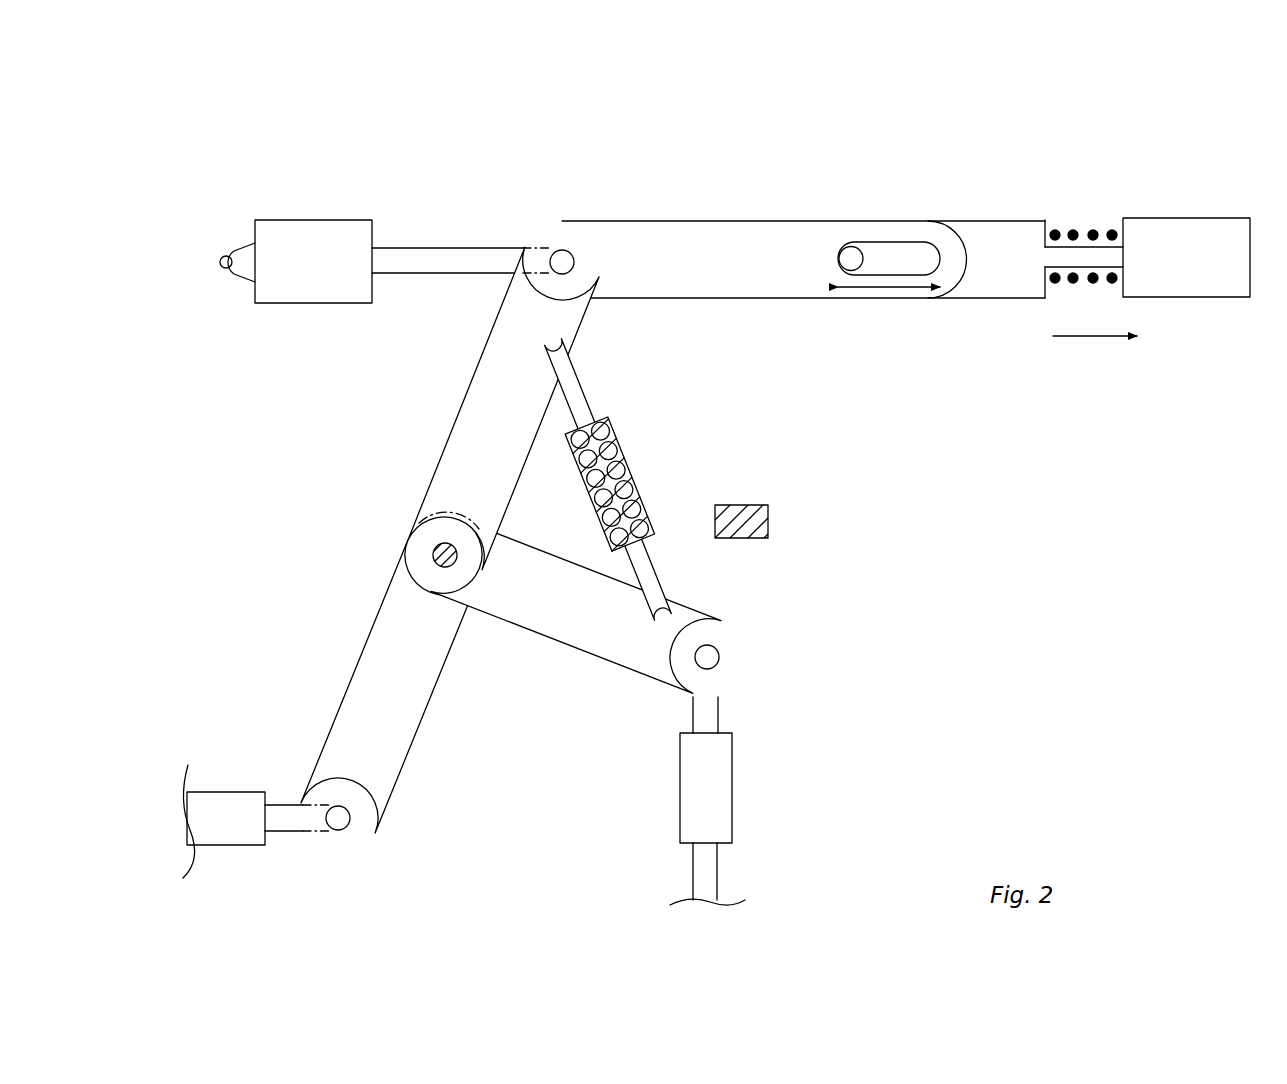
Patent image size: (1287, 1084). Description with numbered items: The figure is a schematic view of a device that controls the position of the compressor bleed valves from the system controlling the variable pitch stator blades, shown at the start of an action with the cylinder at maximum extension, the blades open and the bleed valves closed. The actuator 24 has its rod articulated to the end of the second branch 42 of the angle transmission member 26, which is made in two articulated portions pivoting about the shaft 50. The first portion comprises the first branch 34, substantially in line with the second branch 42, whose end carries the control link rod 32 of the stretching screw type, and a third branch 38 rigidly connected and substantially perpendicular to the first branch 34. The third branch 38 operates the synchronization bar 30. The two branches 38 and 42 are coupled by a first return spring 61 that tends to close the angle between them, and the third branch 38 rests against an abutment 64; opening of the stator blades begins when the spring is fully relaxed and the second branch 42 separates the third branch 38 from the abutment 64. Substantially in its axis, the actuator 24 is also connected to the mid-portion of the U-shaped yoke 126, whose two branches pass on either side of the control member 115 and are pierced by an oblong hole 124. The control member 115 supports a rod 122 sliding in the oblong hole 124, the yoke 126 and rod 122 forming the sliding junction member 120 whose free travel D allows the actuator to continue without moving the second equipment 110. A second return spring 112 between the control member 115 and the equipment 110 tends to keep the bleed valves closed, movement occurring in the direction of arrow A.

The sliding junction member 120 is at (905, 140).
The yoke 126 is at (676, 253).
The rod 122 is at (851, 246).
The oblong hole 124 is at (918, 250).
The control member 115 is at (1010, 252).
The second return spring 112 is at (1093, 228).
The second variable-geometry equipment 110 is at (1165, 255).
The actuator 24 is at (278, 253).
The angle transmission member 26 is at (326, 493).
The control link rod 32 is at (219, 806).
The first branch 34 is at (383, 693).
The third branch 38 is at (585, 622).
The second branch 42 is at (483, 402).
The shaft 50 is at (433, 552).
The synchronization bar 30 is at (703, 777).
The first return spring 61 is at (615, 435).
The abutment 64 is at (749, 505).